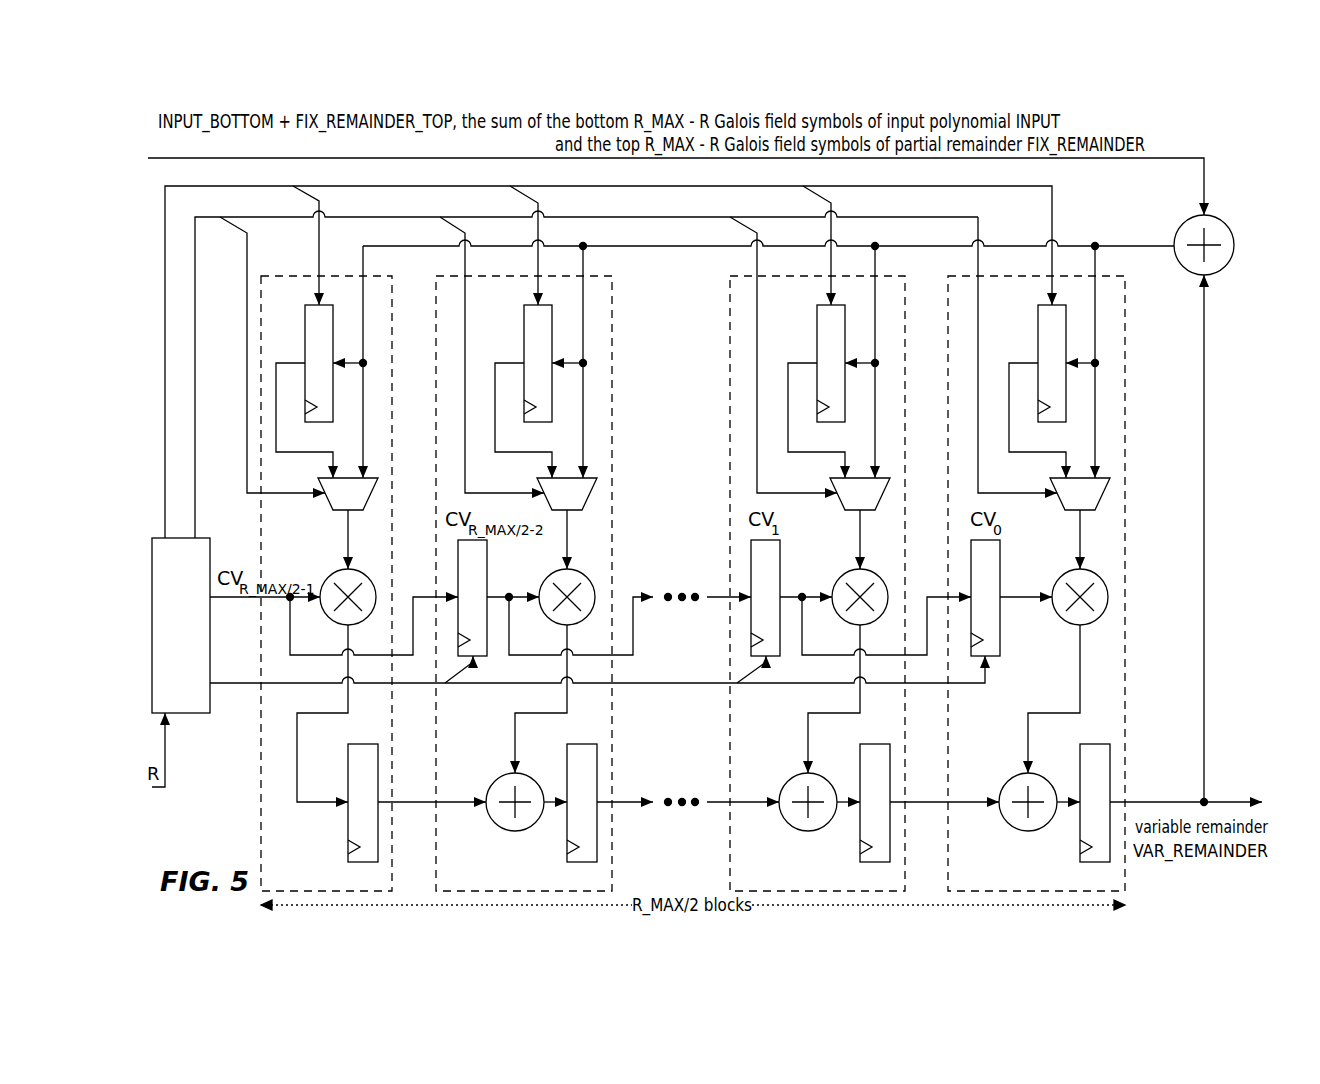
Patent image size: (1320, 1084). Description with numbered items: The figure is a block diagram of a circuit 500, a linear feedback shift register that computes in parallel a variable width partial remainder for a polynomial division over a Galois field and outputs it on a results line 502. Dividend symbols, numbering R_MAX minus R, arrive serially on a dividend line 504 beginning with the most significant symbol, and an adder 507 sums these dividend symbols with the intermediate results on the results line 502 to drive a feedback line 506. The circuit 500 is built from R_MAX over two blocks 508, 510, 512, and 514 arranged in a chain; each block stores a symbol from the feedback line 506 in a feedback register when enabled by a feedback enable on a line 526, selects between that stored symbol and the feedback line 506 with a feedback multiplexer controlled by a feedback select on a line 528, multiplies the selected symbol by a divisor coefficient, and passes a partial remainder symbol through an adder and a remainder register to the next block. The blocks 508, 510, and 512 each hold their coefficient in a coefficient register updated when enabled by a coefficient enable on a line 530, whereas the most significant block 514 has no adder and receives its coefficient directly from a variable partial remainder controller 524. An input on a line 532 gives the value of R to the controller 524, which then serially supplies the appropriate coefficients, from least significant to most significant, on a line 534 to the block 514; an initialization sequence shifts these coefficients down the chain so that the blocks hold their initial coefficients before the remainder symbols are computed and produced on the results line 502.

The circuit 500 is at (1170, 147).
The results line 502 is at (1230, 802).
The dividend line 504 is at (165, 158).
The feedback line 506 is at (1150, 246).
The adder 507 is at (1183, 271).
The block 508 is at (948, 304).
The block 510 is at (730, 304).
The block 512 is at (436, 304).
The most significant block 514 is at (293, 276).
The variable partial remainder controller 524 is at (197, 713).
The feedback enable line 526 is at (180, 187).
The feedback select line 528 is at (195, 300).
The coefficient enable line 530 is at (222, 683).
The R input line 532 is at (152, 787).
The coefficient line 534 is at (222, 597).